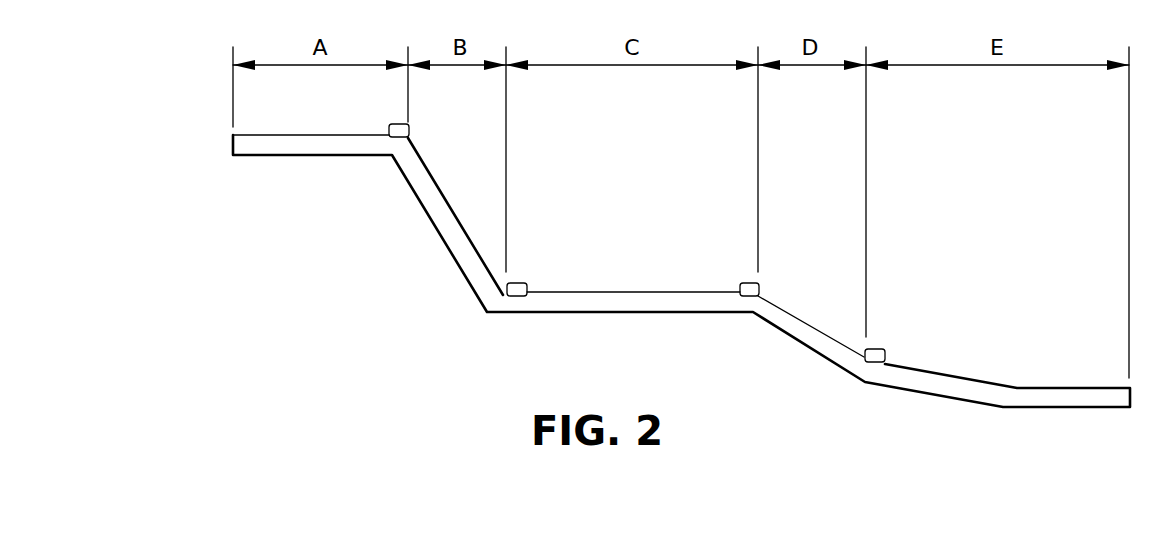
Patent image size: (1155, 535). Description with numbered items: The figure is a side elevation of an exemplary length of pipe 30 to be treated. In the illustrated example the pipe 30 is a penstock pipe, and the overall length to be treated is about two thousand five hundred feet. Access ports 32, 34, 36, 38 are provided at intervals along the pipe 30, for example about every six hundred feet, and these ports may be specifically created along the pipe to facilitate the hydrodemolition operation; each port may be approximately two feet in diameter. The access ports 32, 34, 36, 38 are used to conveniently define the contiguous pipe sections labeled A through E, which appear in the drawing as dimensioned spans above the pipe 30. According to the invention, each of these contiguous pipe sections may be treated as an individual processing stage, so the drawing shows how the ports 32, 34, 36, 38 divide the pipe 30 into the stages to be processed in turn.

The pipe 30 is at (443, 233).
The access port 32 is at (394, 122).
The access port 34 is at (517, 280).
The access port 36 is at (747, 278).
The access port 38 is at (875, 346).